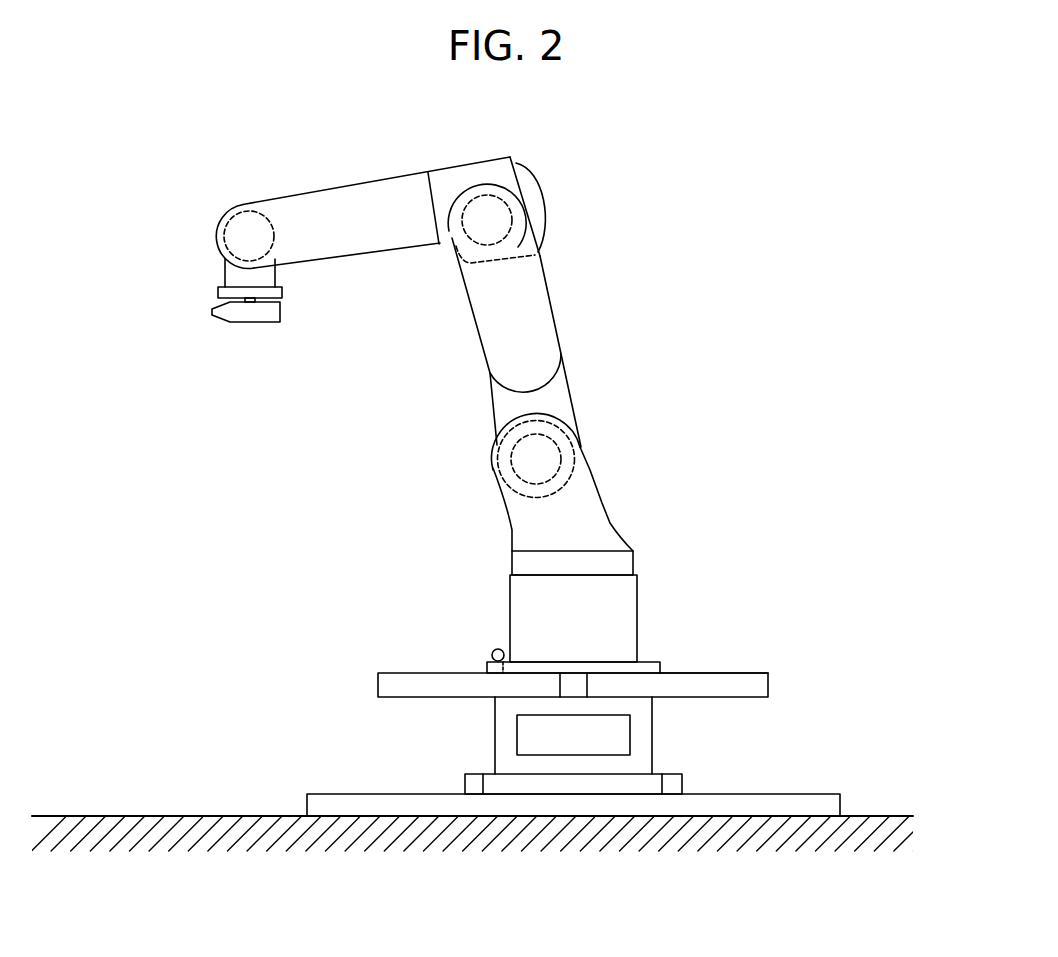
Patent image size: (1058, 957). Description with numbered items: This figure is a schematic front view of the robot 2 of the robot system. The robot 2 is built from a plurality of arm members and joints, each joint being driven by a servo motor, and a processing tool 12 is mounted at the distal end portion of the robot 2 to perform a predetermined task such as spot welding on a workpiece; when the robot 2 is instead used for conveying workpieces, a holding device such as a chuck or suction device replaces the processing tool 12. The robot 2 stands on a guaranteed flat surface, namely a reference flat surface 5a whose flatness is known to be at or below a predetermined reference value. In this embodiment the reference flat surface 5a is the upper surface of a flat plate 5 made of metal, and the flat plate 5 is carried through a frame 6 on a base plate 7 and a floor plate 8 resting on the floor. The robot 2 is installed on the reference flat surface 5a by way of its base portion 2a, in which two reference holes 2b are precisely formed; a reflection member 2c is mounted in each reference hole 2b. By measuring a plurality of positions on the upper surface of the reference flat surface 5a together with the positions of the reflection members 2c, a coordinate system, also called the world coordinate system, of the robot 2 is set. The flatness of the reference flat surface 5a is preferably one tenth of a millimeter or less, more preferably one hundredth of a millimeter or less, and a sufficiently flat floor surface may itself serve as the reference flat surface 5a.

The robot 2 is at (575, 302).
The base portion 2a is at (637, 605).
The reference hole 2b is at (500, 671).
The reflection member 2c is at (492, 648).
The flat plate 5 is at (378, 681).
The reference flat surface 5a is at (745, 673).
The frame 6 is at (495, 740).
The base plate 7 is at (683, 783).
The floor plate 8 is at (305, 805).
The processing tool 12 is at (253, 322).